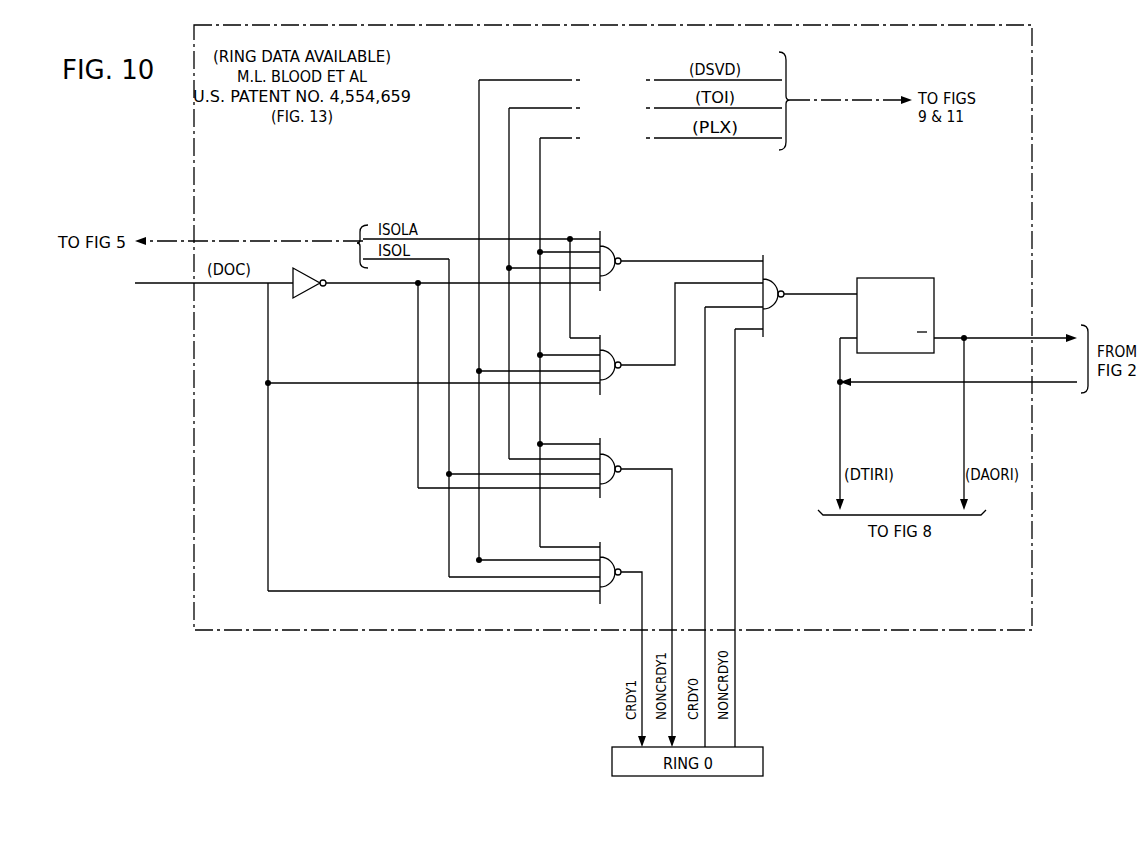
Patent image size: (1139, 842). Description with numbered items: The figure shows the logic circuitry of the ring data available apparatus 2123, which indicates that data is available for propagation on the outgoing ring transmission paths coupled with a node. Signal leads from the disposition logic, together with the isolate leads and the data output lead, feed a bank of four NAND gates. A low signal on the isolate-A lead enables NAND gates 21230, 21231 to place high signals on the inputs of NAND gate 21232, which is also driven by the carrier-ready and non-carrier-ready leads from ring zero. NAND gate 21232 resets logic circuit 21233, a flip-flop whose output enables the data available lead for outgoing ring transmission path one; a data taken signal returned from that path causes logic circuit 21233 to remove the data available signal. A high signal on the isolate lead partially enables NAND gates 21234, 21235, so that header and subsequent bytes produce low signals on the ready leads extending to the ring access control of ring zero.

The ring data available apparatus 2123 is at (1033, 65).
The NAND gate 21230 is at (681, 260).
The NAND gate 21231 is at (681, 339).
The NAND gate 21232 is at (781, 296).
The logic circuit 21233 is at (893, 282).
The NAND gate 21234 is at (638, 590).
The NAND gate 21235 is at (625, 642).